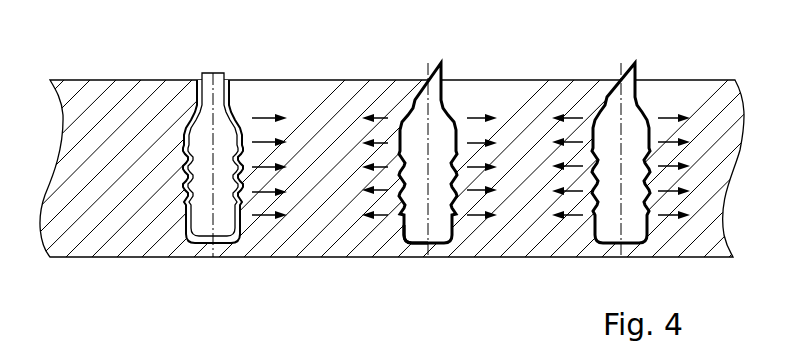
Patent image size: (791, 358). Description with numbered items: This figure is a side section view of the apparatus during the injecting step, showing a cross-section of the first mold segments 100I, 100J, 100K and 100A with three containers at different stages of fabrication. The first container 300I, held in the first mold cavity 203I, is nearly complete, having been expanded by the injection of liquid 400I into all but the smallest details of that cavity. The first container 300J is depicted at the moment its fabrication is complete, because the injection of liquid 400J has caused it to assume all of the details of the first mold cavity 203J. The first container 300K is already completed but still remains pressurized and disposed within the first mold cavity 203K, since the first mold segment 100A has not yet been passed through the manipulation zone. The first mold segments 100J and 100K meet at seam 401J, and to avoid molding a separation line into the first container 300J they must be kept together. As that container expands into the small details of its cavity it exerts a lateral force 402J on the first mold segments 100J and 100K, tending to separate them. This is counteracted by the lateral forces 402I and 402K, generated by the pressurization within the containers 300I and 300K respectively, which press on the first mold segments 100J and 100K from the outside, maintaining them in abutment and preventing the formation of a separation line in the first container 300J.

The first mold segment 100I is at (63, 250).
The first mold segment 100J is at (308, 228).
The first mold segment 100K is at (520, 236).
The first mold segment 100A is at (705, 238).
The first mold cavity 203I is at (196, 245).
The first mold cavity 203J is at (445, 258).
The first mold cavity 203K is at (630, 246).
The first container 300I is at (226, 73).
The first container 300J is at (445, 70).
The first container 300K is at (638, 72).
The liquid 400I is at (219, 64).
The liquid 400J is at (431, 53).
The seam 401J is at (413, 246).
The lateral force 402I is at (258, 224).
The lateral force 402J is at (478, 218).
The lateral force 402K is at (572, 220).